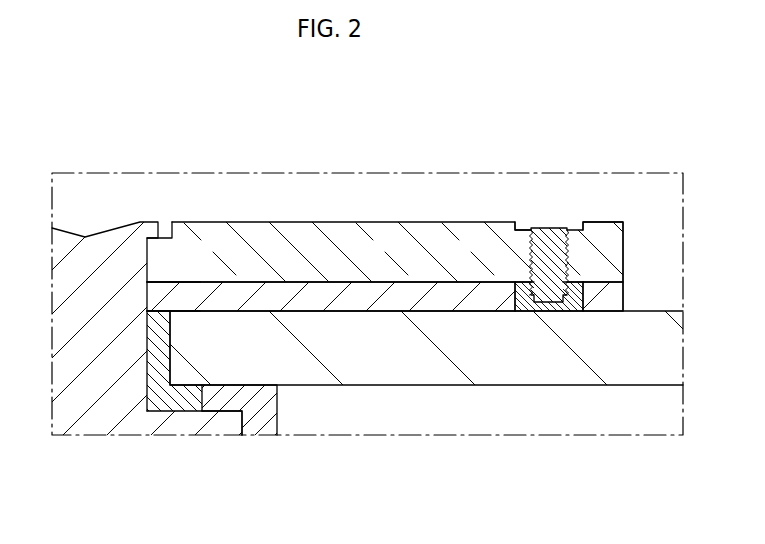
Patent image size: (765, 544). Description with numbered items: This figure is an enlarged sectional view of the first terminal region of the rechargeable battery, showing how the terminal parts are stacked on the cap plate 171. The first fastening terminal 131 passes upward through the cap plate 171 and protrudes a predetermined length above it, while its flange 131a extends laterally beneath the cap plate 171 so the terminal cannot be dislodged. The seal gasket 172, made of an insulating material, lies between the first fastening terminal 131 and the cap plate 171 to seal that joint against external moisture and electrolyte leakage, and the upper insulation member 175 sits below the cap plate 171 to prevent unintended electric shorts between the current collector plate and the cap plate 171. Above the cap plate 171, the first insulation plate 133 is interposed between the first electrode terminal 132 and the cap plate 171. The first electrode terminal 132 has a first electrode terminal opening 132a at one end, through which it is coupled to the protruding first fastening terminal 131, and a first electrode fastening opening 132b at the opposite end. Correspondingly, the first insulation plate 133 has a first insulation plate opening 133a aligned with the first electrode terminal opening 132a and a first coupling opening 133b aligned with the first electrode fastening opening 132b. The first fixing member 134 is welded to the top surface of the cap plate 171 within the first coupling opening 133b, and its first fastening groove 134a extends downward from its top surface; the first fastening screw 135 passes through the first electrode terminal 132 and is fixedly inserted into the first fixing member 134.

The first fastening terminal 131 is at (95, 257).
The flange 131a is at (230, 425).
The first electrode terminal 132 is at (382, 238).
The first electrode terminal opening 132a is at (152, 258).
The first electrode fastening opening 132b is at (570, 252).
The first insulation plate 133 is at (427, 297).
The first insulation plate opening 133a is at (150, 299).
The first coupling opening 133b is at (507, 301).
The first fixing member 134 is at (578, 305).
The first fastening groove 134a is at (512, 281).
The first fastening screw 135 is at (548, 238).
The cap plate 171 is at (658, 372).
The seal gasket 172 is at (158, 357).
The upper insulation member 175 is at (268, 420).